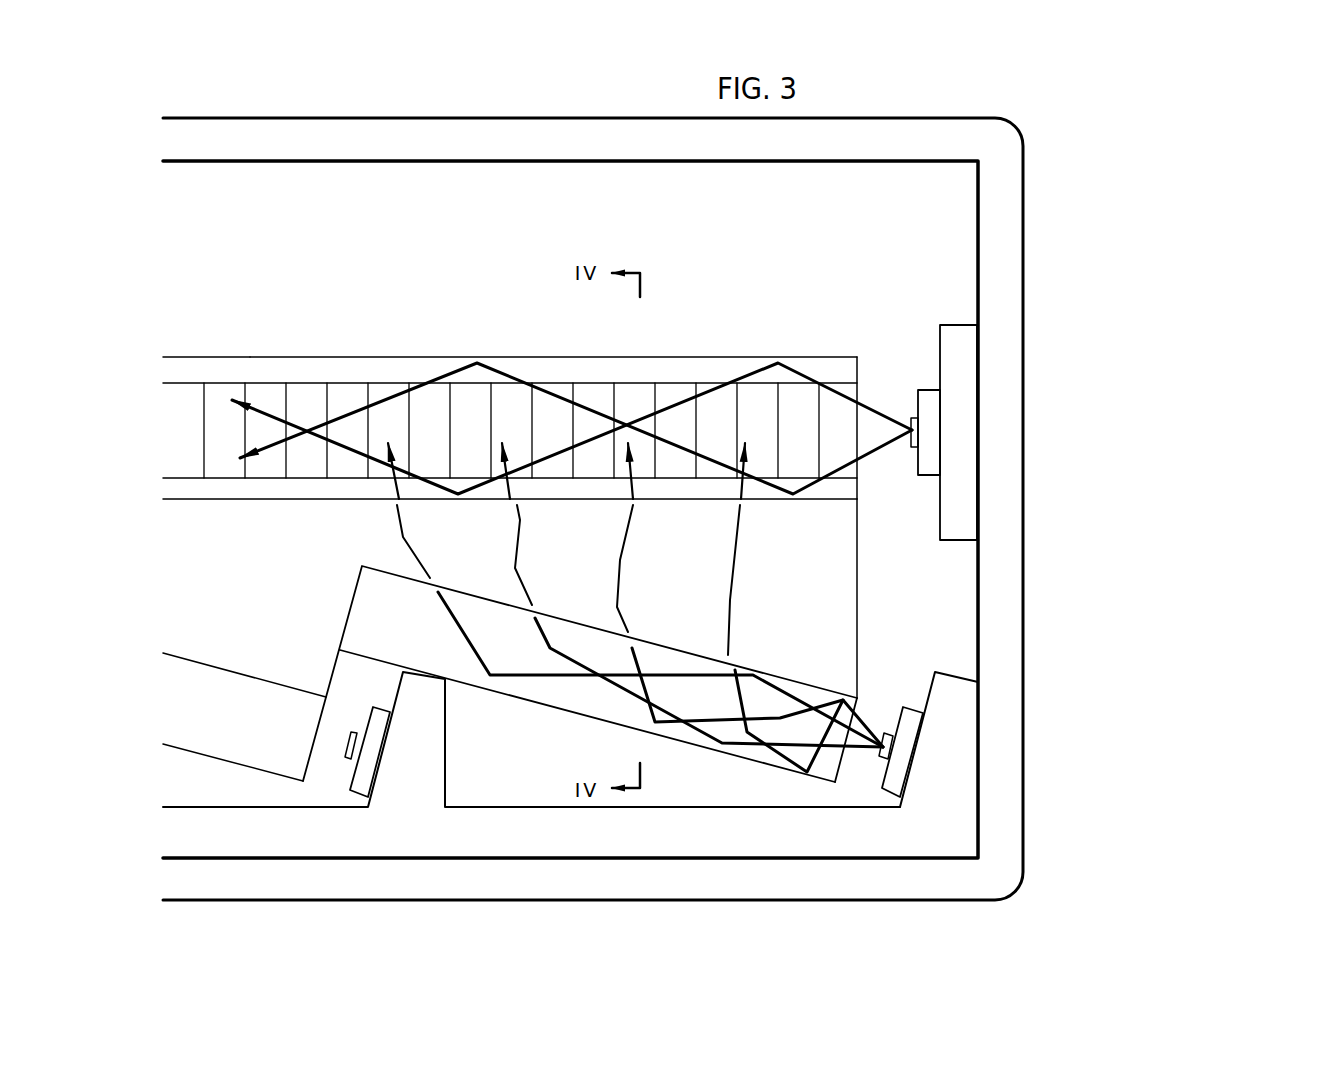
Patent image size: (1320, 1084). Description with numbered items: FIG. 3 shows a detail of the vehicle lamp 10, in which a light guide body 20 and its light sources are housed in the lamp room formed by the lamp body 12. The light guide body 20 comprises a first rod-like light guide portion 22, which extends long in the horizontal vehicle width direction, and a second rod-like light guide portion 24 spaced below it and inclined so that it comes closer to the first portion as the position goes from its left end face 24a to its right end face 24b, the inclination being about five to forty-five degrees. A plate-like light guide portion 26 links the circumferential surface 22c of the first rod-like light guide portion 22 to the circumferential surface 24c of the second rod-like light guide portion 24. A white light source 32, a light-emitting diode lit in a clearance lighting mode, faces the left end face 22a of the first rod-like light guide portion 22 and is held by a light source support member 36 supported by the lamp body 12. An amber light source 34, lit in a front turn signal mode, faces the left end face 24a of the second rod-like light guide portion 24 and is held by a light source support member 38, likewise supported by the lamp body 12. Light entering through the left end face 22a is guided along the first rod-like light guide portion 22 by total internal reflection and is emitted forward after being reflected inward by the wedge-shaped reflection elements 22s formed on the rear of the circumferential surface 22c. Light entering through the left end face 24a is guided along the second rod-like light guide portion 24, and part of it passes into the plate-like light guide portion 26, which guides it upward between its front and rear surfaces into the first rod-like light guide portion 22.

The vehicle lamp 10 is at (1133, 165).
The lamp body 12 is at (1027, 267).
The light guide body 20 is at (313, 352).
The first rod-like light guide portion 22 is at (677, 367).
The left end face 22a is at (858, 448).
The circumferential surface 22c is at (215, 367).
The reflection elements 22s is at (473, 425).
The second rod-like light guide portion 24 is at (593, 697).
The left end face 24a is at (875, 748).
The right end face 24b is at (352, 608).
The circumferential surface 24c is at (227, 733).
The plate-like light guide portion 26 is at (777, 566).
The light source 32 is at (903, 397).
The light source 34 is at (882, 715).
The light source support member 36 is at (962, 368).
The light source support member 38 is at (953, 750).